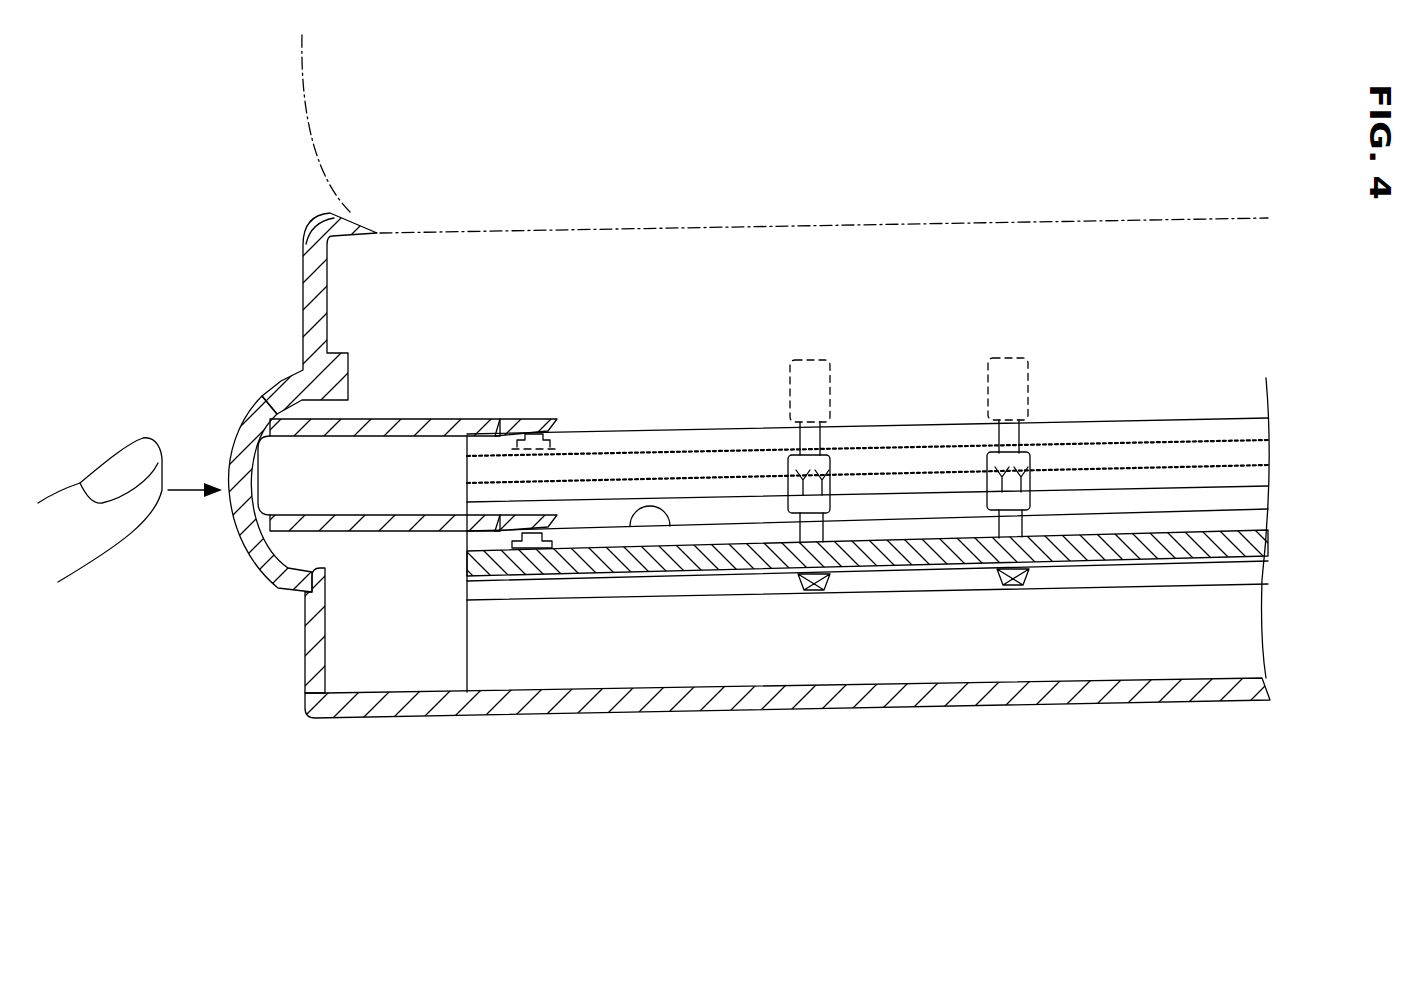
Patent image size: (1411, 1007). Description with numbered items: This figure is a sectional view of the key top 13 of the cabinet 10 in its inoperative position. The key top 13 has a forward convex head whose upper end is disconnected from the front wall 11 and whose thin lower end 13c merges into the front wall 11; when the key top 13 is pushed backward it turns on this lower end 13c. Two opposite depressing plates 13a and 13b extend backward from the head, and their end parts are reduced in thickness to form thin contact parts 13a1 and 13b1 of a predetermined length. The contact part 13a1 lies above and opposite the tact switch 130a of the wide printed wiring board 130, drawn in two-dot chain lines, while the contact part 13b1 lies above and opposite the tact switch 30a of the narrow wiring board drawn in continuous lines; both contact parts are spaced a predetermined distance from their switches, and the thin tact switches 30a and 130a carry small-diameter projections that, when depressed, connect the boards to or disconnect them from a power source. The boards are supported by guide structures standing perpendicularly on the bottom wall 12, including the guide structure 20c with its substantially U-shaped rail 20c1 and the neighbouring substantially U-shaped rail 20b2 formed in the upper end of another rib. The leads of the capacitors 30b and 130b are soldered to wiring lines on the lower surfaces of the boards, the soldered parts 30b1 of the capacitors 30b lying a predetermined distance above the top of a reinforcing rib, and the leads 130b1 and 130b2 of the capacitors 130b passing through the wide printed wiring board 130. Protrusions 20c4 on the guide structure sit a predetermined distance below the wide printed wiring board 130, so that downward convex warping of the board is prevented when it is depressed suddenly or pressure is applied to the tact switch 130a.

The housing 10 is at (769, 695).
The front wall 11 is at (302, 288).
The bottom wall 12 is at (703, 714).
The key top 13 is at (352, 539).
The depressing plate 13a is at (407, 419).
The contact part 13a1 is at (540, 419).
The depressing plate 13b is at (376, 533).
The contact part 13b1 is at (537, 511).
The lower end 13c is at (292, 606).
The rail 20b2 is at (1158, 485).
The guide structure 20c is at (1203, 630).
The rail 20c1 is at (1198, 523).
The protrusions 20c4 is at (651, 508).
The tact switch 30a is at (540, 549).
The capacitor 30b is at (787, 502).
The soldered parts 30b1 is at (800, 590).
The wide printed wiring board 130 is at (1087, 453).
The tact switch 130a is at (562, 437).
The capacitor 130b is at (812, 357).
The first terminal 130b1 is at (848, 472).
The second terminal 130b2 is at (1047, 472).